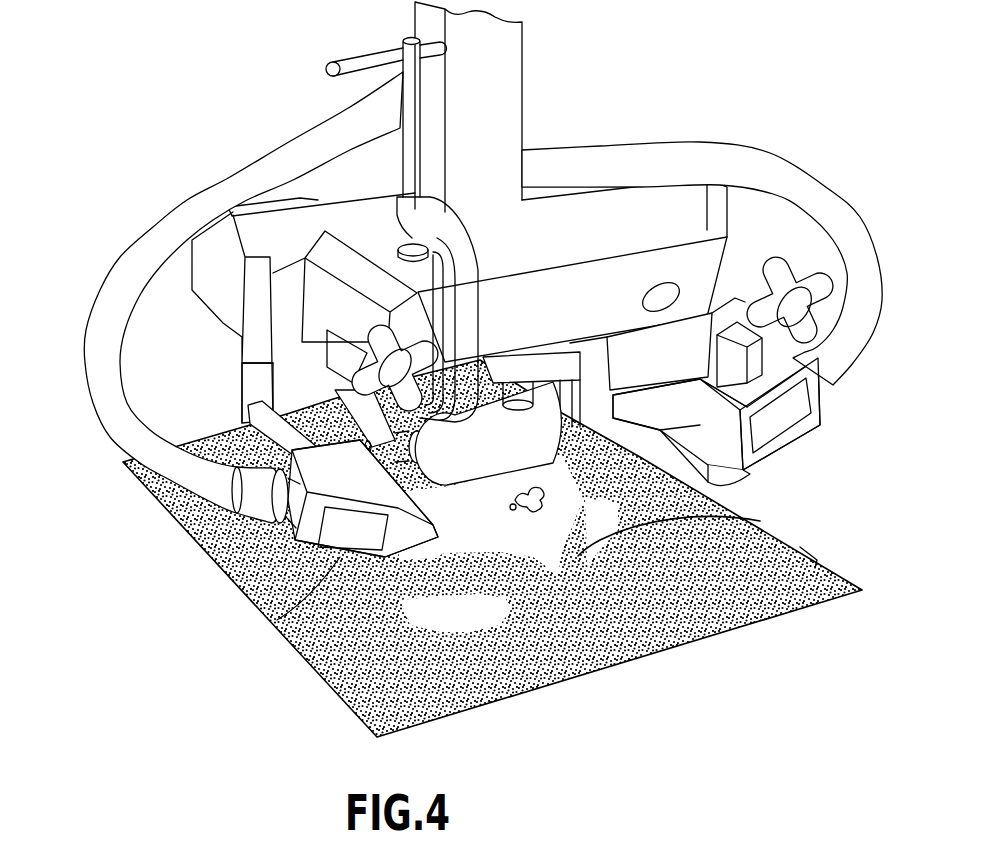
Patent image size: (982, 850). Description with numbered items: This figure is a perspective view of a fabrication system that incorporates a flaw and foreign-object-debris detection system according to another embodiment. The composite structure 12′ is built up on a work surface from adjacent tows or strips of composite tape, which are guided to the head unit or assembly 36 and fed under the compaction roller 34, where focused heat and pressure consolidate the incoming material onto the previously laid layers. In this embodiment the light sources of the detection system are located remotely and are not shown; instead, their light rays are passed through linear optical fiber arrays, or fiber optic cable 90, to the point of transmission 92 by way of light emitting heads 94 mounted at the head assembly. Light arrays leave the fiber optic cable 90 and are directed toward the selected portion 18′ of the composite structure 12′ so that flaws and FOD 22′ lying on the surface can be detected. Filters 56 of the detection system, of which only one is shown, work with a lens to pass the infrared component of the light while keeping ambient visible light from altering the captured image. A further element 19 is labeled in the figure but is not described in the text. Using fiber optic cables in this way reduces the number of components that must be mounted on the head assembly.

The composite structure 12′ is at (538, 688).
The selected portion 18′ is at (574, 592).
The boundary line of cleaned area 19 is at (760, 521).
The flaws and FOD 22′ is at (510, 507).
The compaction roller 34 is at (538, 466).
The head unit or assembly 36 is at (355, 107).
The filters 56 is at (515, 420).
The fiber optic cable 90 is at (800, 180).
The point of transmission 92 is at (735, 484).
The light emitting heads 94 is at (797, 440).